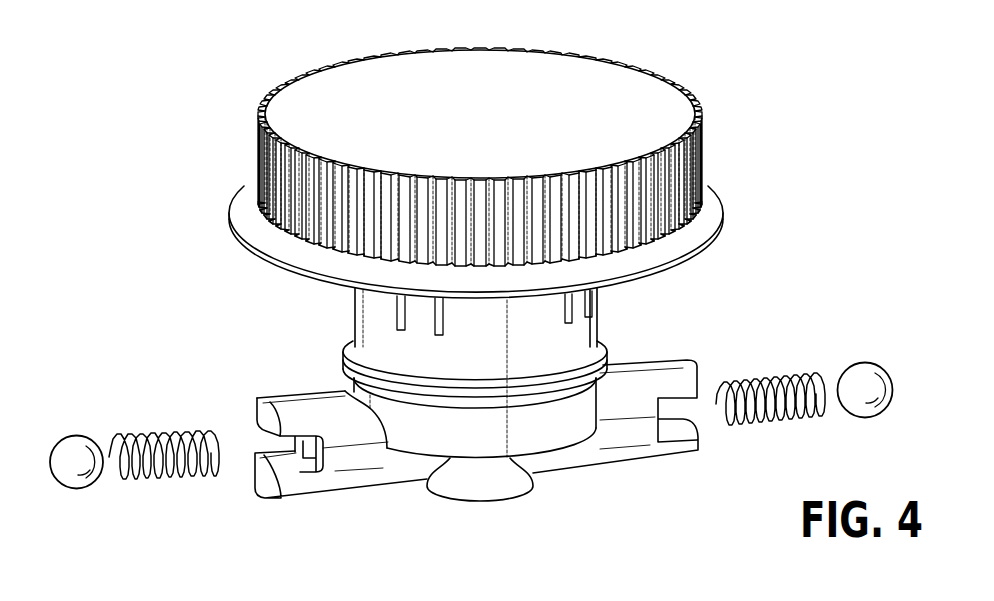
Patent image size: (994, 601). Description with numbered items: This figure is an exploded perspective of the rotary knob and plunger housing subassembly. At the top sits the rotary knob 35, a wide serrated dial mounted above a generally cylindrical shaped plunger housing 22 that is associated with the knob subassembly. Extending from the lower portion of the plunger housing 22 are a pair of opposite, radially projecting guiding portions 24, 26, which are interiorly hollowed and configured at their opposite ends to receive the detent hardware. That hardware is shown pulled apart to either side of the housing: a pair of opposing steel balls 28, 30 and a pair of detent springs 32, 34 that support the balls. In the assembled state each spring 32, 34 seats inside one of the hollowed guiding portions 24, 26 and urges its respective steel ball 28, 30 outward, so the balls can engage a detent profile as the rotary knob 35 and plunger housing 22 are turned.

The rotary knob 35 is at (385, 92).
The plunger housing 22 is at (358, 338).
The guiding portion 24 is at (353, 478).
The guiding portion 26 is at (668, 452).
The steel ball 28 is at (67, 450).
The steel ball 30 is at (863, 378).
The detent spring 32 is at (131, 437).
The detent spring 34 is at (806, 380).